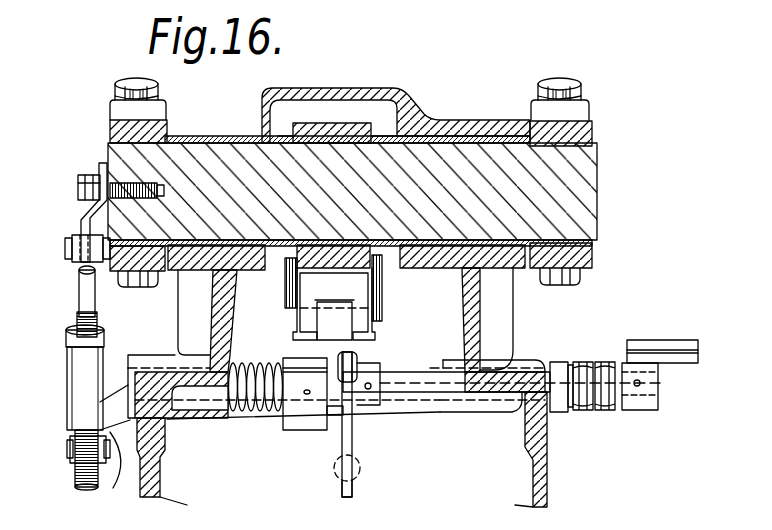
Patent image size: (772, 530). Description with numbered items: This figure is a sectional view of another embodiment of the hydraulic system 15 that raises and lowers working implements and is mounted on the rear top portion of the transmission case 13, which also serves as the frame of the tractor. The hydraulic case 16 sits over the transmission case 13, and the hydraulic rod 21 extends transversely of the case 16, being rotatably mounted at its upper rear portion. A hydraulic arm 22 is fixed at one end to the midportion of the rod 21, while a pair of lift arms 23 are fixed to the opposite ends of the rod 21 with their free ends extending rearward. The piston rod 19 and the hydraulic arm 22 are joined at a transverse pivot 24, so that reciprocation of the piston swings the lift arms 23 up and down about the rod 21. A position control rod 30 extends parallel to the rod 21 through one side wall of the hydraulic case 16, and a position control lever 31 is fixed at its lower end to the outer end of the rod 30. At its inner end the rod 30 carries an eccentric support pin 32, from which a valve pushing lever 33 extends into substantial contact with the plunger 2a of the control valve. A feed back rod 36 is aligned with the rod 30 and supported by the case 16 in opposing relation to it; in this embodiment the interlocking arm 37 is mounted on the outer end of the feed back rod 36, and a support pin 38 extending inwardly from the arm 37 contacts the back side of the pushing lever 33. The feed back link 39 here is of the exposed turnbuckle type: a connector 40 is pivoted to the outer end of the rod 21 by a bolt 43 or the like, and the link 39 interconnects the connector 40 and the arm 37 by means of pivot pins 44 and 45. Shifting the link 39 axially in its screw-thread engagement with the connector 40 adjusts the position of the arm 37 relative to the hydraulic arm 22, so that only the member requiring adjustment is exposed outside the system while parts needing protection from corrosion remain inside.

The hydraulic system 15 is at (430, 105).
The hydraulic case 16 is at (380, 88).
The hydraulic rod 21 is at (590, 163).
The lift arms 23 is at (107, 107).
The transverse pivot 24 is at (288, 290).
The transmission case 13 is at (552, 447).
The hydraulic arm 22 is at (363, 287).
The piston rod 19 is at (335, 328).
The support pin 32 is at (335, 357).
The feed back rod 36 is at (252, 410).
The position control rod 30 is at (417, 395).
The support pin 38 is at (340, 412).
The plunger 2a is at (360, 457).
The valve pushing lever 33 is at (353, 480).
The position control lever 31 is at (667, 345).
The bolt 43 is at (82, 175).
The connector 40 is at (81, 221).
The pivot pin 45 is at (65, 247).
The feed back link 39 is at (72, 377).
The pivot pin 44 is at (68, 450).
The interlocking arm 37 is at (113, 475).